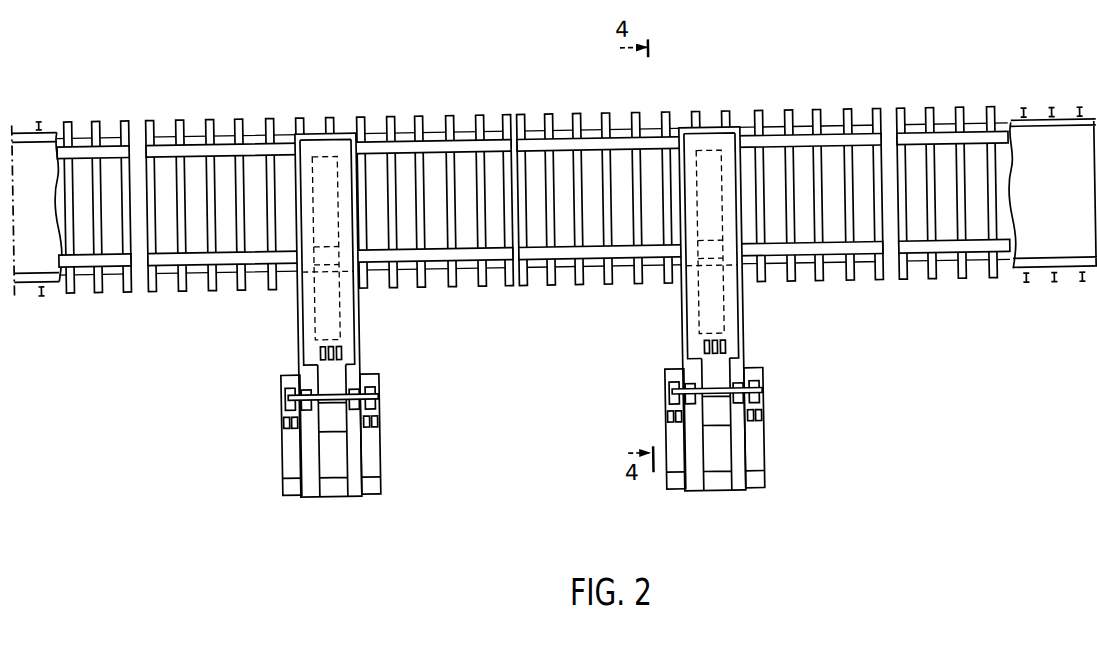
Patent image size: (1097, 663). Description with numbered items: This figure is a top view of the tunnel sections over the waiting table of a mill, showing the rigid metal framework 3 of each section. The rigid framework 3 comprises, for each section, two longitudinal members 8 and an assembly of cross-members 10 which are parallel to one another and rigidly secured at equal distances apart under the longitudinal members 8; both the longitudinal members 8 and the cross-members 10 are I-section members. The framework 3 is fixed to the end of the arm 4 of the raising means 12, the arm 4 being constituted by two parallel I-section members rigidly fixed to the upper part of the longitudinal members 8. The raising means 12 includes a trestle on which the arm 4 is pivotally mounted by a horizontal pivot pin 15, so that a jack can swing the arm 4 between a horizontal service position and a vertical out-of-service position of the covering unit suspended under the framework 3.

The rigid metal framework 3 is at (433, 113).
The arm 4 is at (506, 343).
The longitudinal members 8 is at (228, 140).
The cross-members 10 is at (391, 114).
The raising means 12 is at (702, 500).
The horizontal pivot pin 15 is at (324, 393).